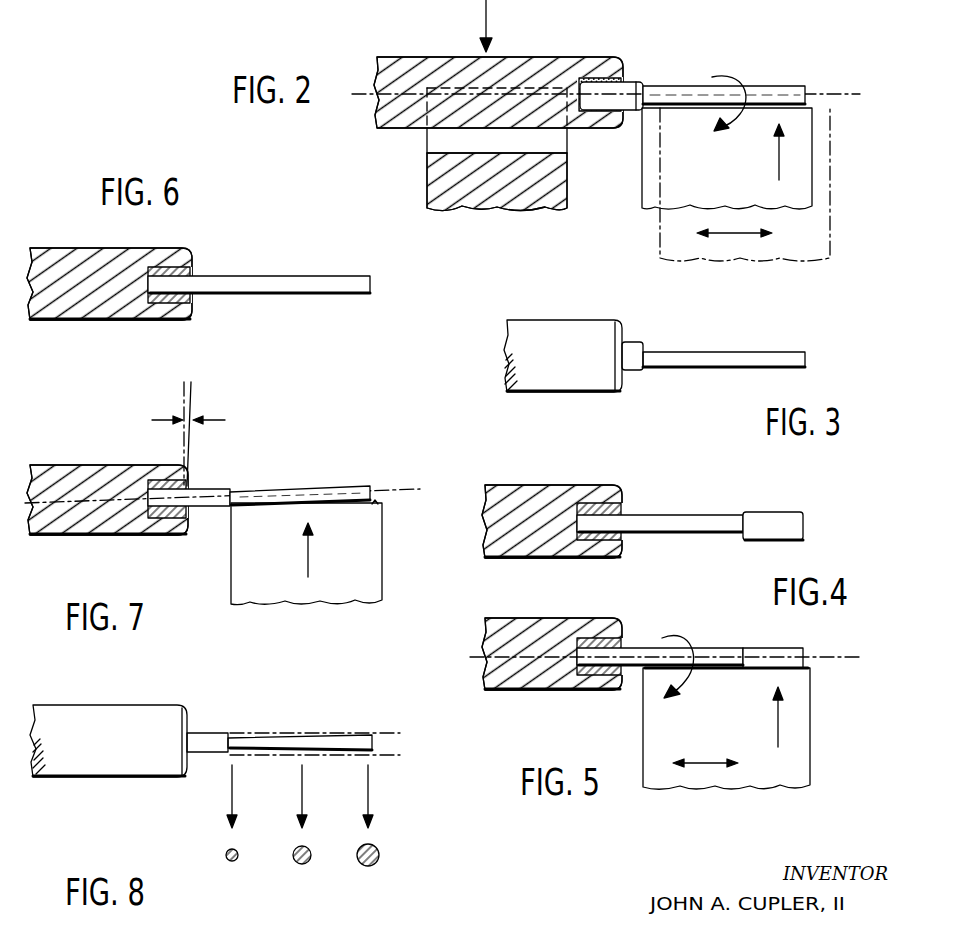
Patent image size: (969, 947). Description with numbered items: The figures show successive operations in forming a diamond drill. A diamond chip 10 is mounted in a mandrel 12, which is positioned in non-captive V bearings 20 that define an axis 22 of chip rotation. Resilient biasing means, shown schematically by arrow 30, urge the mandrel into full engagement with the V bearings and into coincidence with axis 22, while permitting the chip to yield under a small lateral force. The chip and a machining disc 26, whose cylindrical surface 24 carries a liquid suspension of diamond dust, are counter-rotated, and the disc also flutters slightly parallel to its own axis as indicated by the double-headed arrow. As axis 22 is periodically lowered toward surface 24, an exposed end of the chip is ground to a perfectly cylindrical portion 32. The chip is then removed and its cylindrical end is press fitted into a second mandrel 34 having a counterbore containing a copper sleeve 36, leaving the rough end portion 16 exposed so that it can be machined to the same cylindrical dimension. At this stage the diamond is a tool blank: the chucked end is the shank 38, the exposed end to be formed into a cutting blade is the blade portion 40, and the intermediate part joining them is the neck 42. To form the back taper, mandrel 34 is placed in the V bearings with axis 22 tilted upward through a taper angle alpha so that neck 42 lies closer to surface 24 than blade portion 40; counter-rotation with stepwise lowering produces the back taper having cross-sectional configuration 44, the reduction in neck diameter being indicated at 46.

In FIG. 2, the chip 10 is at (680, 77).
In FIG. 2, the mandrel 12 is at (555, 57).
In FIG. 3, the mandrel 12 is at (557, 327).
In FIG. 4, the rough end portion 16 is at (774, 509).
In FIG. 2, the V bearings 20 is at (442, 170).
In FIG. 2, the axis 22 is at (843, 100).
In FIG. 7, the axis 22 is at (383, 492).
In FIG. 7, the cylindrical surface 24 is at (373, 504).
In FIG. 2, the machining disc 26 is at (650, 180).
In FIG. 7, the machining disc 26 is at (256, 571).
In FIG. 5, the machining disc 26 is at (806, 735).
In FIG. 2, the resilient biasing means 30 is at (486, 17).
In FIG. 3, the cylindrical end portion 32 is at (748, 352).
In FIG. 4, the cylindrical end portion 32 is at (698, 515).
In FIG. 5, the cylindrical end portion 32 is at (739, 648).
In FIG. 6, the second mandrel 34 is at (174, 248).
In FIG. 7, the second mandrel 34 is at (118, 535).
In FIG. 8, the second mandrel 34 is at (145, 720).
In FIG. 4, the second mandrel 34 is at (516, 497).
In FIG. 5, the second mandrel 34 is at (529, 633).
In FIG. 4, the copper sleeve 36 is at (622, 504).
In FIG. 5, the copper sleeve 36 is at (612, 640).
In FIG. 6, the shank 38 is at (186, 312).
In FIG. 7, the blade portion 40 is at (370, 464).
In FIG. 7, the neck 42 is at (233, 464).
In FIG. 8, the cross-sectional configuration 44 is at (385, 874).
In FIG. 8, the reduction in neck diameter 46 is at (229, 736).